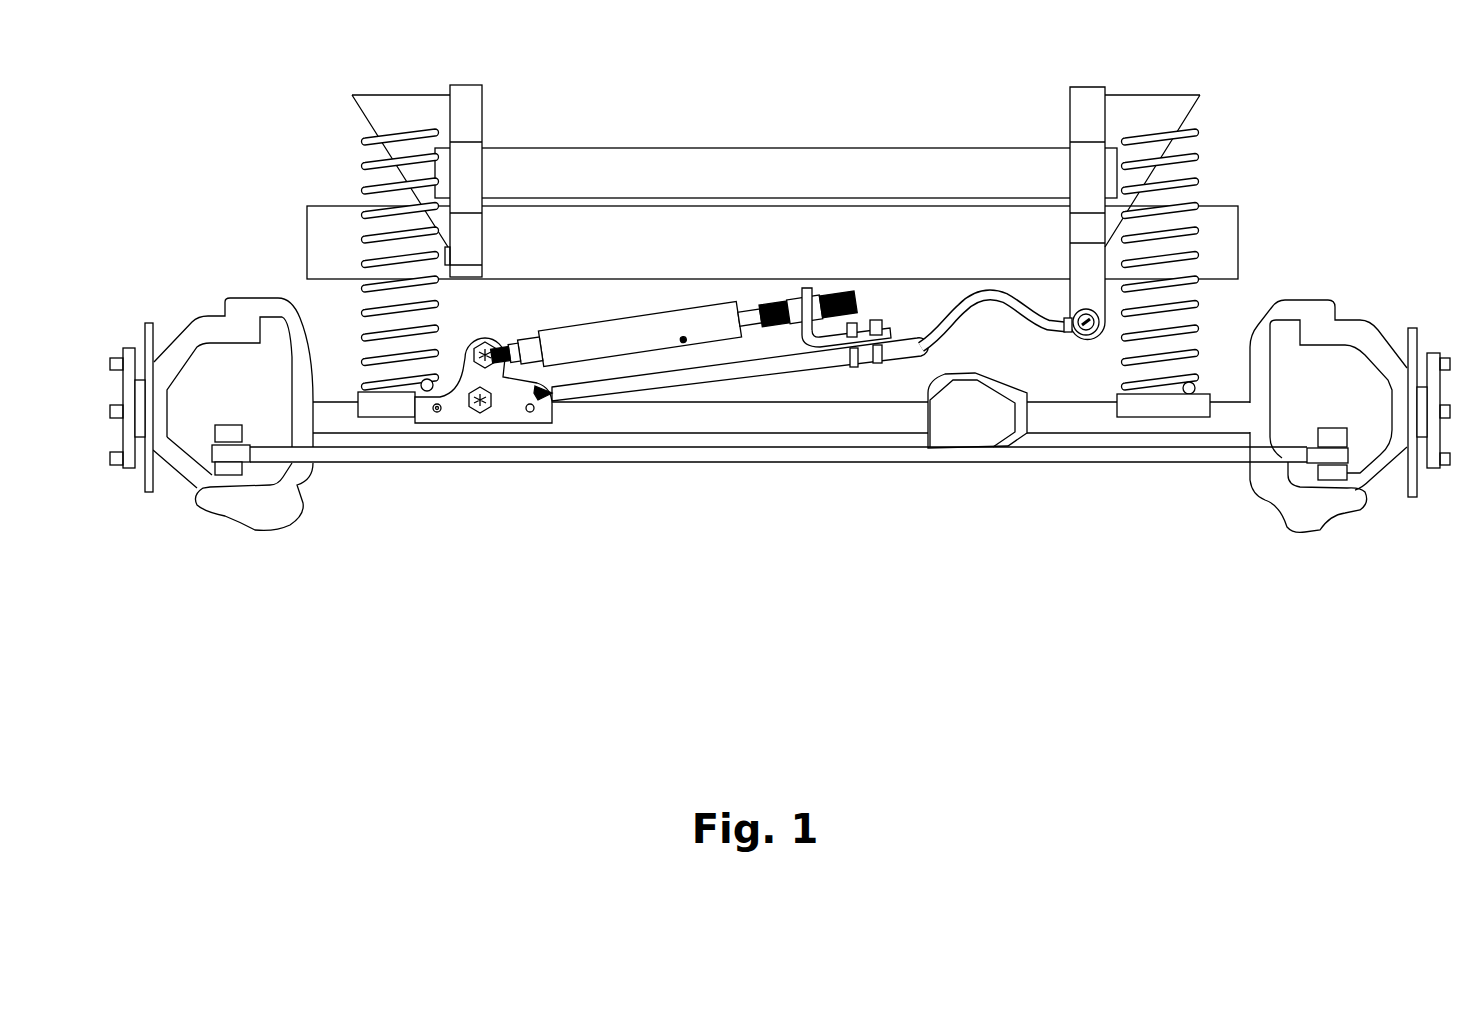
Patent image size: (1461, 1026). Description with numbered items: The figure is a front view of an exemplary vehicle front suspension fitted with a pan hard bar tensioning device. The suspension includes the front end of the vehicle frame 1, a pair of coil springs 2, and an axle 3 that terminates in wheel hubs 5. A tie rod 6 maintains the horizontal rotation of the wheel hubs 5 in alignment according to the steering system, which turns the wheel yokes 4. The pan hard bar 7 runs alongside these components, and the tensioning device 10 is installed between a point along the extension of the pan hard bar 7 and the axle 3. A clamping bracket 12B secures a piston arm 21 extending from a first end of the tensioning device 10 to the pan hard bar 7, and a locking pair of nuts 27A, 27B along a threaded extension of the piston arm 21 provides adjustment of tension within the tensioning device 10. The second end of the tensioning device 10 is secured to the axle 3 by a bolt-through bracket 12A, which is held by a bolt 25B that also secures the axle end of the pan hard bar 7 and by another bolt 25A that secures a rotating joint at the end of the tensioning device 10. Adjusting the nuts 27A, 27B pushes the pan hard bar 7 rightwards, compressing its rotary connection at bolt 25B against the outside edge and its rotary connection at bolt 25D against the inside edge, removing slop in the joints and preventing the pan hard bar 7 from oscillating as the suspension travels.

The vehicle frame 1 is at (830, 148).
The coil springs 2 is at (1193, 284).
The axle 3 is at (1057, 425).
The wheel yokes 4 is at (1358, 320).
The wheel hubs 5 is at (1430, 468).
The tie rod 6 is at (908, 457).
The pan hard bar 7 is at (723, 377).
The tensioning device 10 is at (560, 325).
The bolt-through bracket 12A is at (443, 423).
The clamping bracket 12B is at (822, 352).
The piston arm 21 is at (747, 332).
The bolt 25A is at (490, 367).
The bolt 25B is at (480, 405).
The bolt 25D is at (1088, 333).
The nut 27A is at (790, 305).
The nut 27B is at (818, 293).